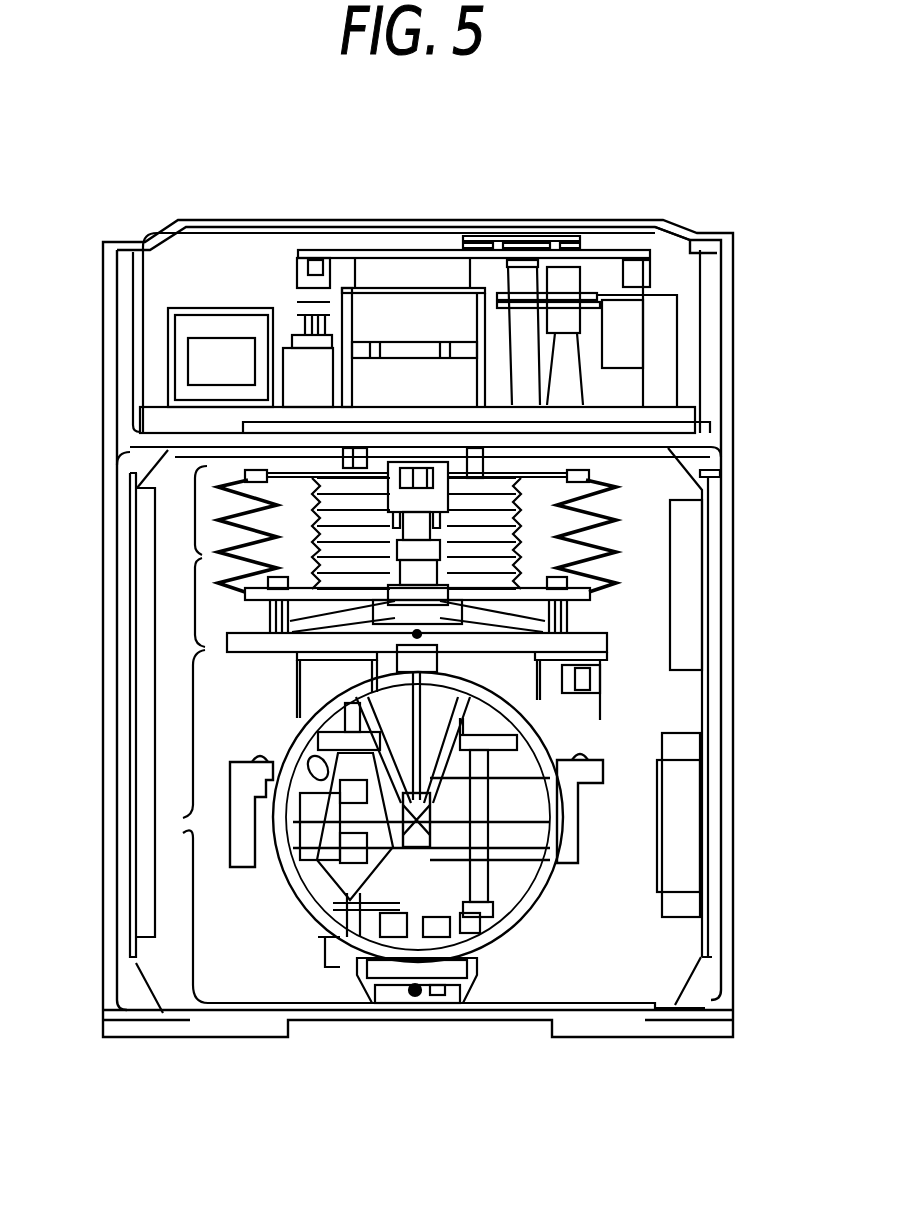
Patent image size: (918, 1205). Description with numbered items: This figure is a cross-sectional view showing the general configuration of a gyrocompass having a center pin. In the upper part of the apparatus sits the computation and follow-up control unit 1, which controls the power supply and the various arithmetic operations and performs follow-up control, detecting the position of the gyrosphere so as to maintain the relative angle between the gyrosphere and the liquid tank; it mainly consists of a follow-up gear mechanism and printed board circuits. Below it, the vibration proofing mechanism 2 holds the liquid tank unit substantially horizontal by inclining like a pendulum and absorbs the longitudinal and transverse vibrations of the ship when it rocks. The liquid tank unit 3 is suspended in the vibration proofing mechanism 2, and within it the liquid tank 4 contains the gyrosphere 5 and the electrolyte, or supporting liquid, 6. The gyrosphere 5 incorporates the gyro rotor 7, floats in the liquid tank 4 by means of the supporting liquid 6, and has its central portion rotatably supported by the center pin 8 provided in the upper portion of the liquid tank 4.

The computation and follow-up control unit 1 is at (92, 222).
The vibration proofing mechanism 2 is at (196, 553).
The liquid tank unit 3 is at (181, 818).
The liquid tank 4 is at (568, 835).
The gyrosphere 5 is at (510, 890).
The electrolyte (supporting liquid) 6 is at (433, 743).
The gyro rotor 7 is at (352, 770).
The center pin 8 is at (420, 693).